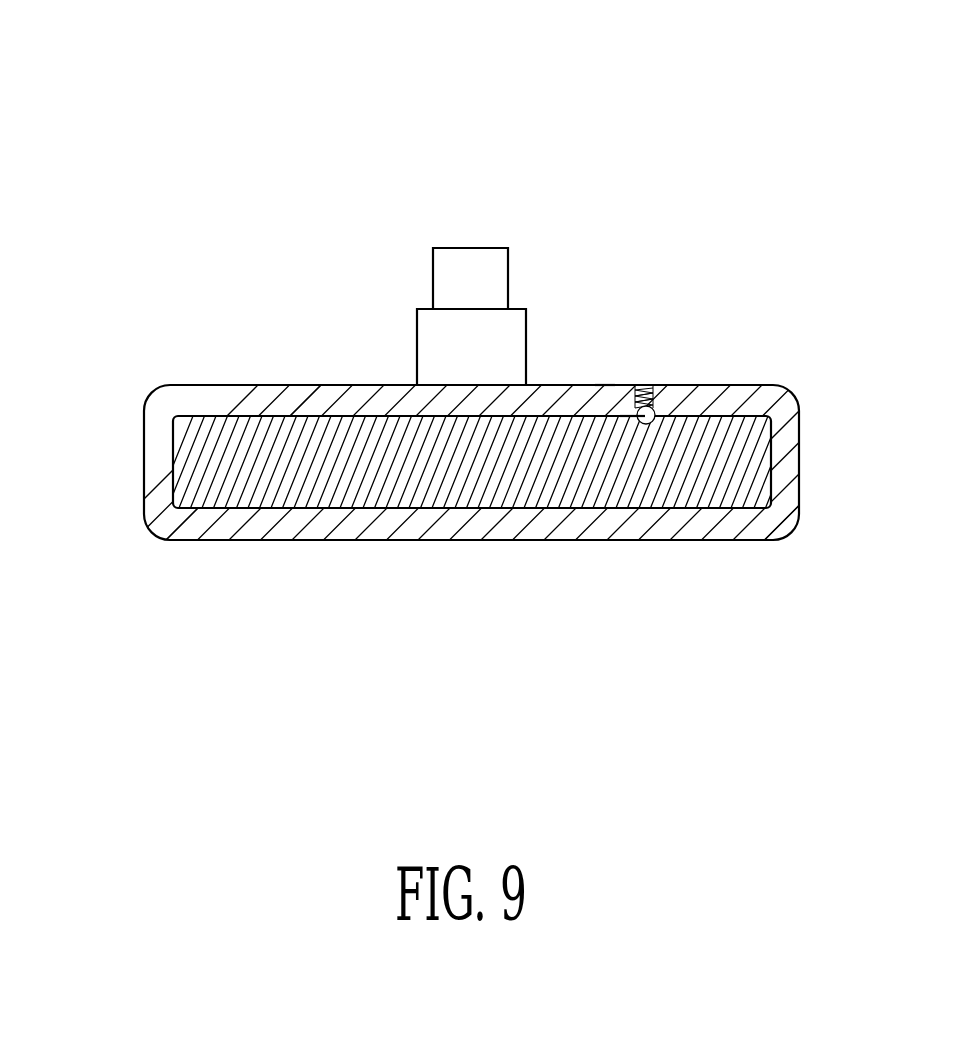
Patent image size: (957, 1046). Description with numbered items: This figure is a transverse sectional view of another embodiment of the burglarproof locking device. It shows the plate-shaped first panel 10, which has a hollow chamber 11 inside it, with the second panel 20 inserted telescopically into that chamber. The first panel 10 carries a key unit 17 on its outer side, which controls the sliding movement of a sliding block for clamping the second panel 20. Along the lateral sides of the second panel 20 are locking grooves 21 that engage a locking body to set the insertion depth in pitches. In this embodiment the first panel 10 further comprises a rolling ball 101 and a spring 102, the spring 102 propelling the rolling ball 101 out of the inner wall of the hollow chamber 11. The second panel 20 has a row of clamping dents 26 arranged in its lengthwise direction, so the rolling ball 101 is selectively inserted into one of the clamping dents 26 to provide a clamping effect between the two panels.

The first panel 10 is at (480, 530).
The second panel 20 is at (315, 457).
The key unit 17 is at (460, 287).
The locking grooves 21 is at (193, 412).
The hollow chamber 11 is at (603, 410).
The spring 102 is at (652, 387).
The rolling ball 101 is at (650, 420).
The clamping dents 26 is at (637, 426).